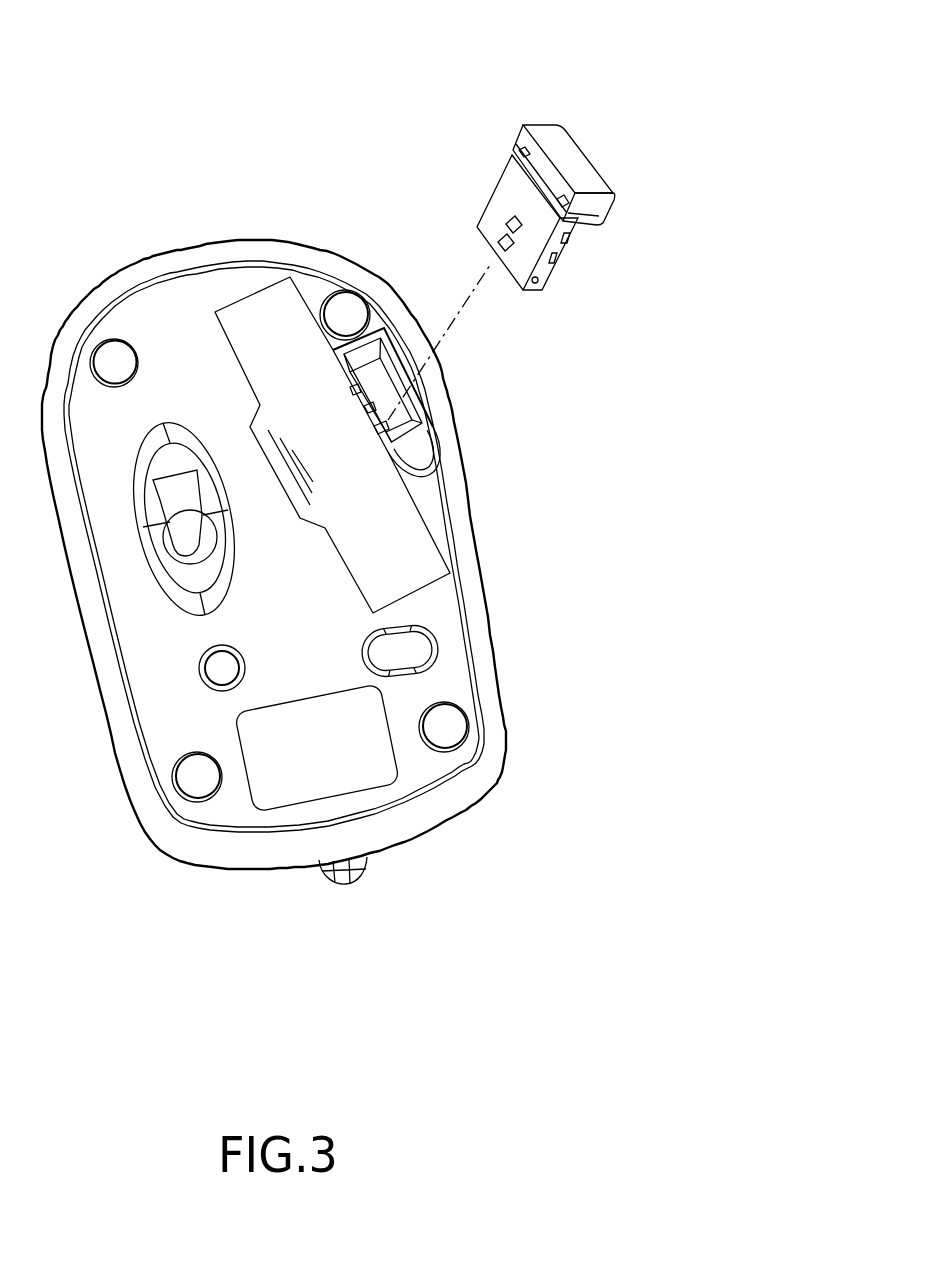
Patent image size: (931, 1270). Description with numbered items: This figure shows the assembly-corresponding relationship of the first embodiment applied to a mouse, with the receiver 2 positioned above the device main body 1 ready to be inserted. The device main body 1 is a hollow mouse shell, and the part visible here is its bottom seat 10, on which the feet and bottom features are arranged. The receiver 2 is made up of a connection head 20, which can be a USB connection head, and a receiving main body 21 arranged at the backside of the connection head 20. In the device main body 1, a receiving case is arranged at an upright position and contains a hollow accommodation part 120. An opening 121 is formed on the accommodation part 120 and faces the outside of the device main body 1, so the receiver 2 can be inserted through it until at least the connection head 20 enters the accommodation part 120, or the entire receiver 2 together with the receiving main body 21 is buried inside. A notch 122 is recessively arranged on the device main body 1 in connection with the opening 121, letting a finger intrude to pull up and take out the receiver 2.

The device main body 1 is at (227, 238).
The receiver 2 is at (536, 106).
The bottom seat 10 is at (450, 680).
The connection head 20 is at (527, 256).
The receiving main body 21 is at (570, 154).
The accommodation part 120 is at (392, 420).
The opening 121 is at (375, 406).
The notch 122 is at (423, 455).